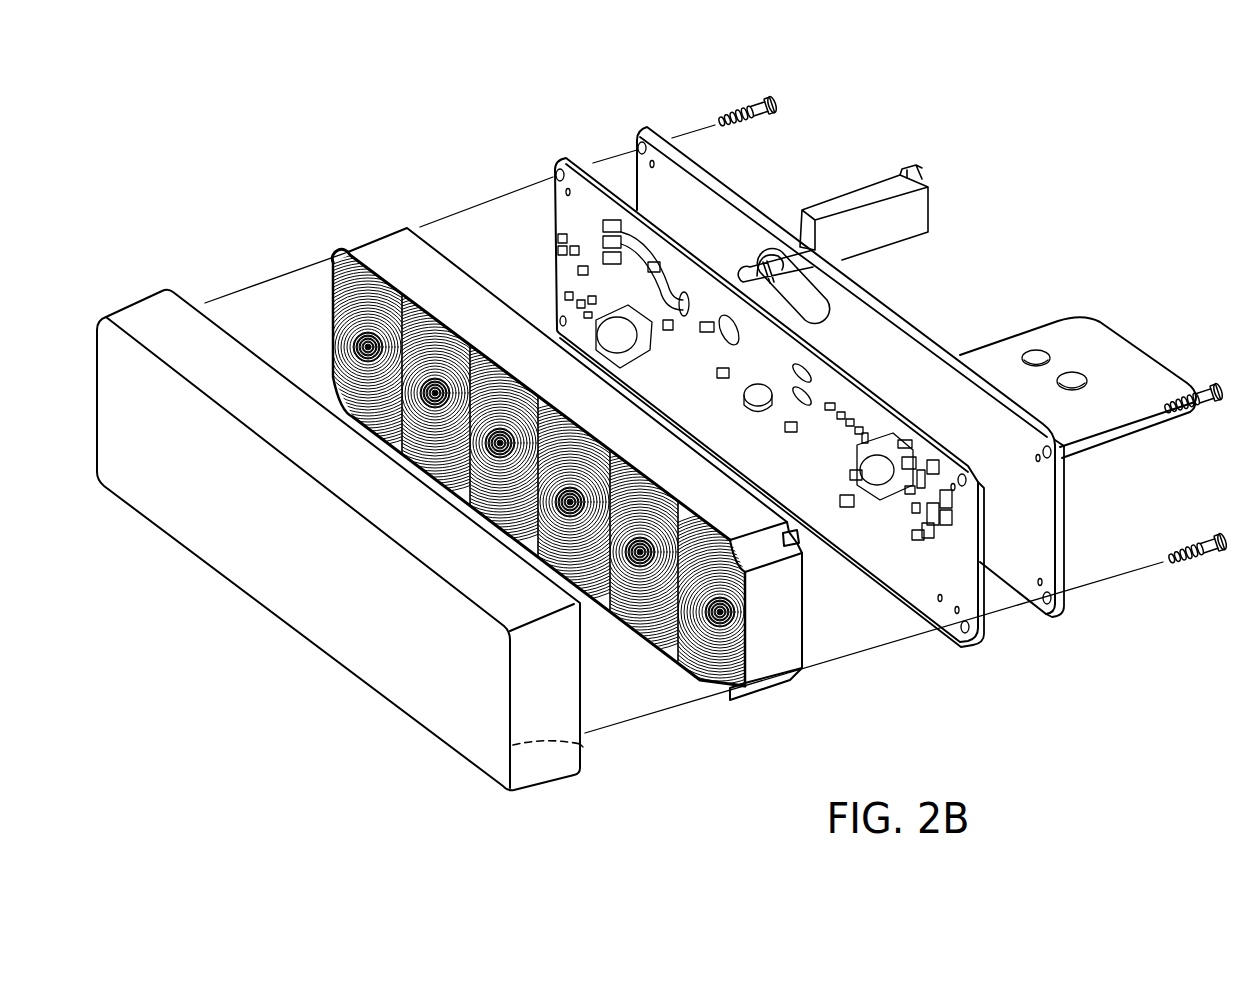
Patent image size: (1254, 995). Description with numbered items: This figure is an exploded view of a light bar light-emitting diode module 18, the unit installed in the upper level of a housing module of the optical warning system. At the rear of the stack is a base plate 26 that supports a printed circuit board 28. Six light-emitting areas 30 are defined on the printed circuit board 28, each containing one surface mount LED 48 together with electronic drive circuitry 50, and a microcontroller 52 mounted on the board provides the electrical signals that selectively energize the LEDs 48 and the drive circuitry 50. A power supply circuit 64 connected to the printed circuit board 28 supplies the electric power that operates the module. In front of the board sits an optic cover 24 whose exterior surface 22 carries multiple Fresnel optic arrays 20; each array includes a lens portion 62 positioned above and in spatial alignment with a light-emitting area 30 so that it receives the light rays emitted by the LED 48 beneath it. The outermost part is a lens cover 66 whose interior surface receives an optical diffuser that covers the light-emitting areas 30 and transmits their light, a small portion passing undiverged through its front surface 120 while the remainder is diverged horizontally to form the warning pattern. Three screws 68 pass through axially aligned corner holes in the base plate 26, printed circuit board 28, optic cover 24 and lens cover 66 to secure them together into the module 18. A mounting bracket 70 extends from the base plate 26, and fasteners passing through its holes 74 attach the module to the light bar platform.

The LED module 18 is at (662, 443).
The Fresnel optic arrays 20 is at (362, 347).
The exterior surface 22 is at (343, 302).
The optic cover 24 is at (383, 244).
The base plate 26 is at (1064, 507).
The printed circuit board 28 is at (980, 617).
The light-emitting areas 30 is at (574, 272).
The surface mount LEDs 48 is at (652, 317).
The electronic drive circuitry 50 is at (880, 435).
The microcontroller 52 is at (910, 493).
The lens portion 62 is at (750, 634).
The power supply circuit 64 is at (910, 218).
The lens cover 66 is at (133, 304).
The screws 68 is at (788, 110).
The mounting bracket 70 is at (1092, 335).
The holes 74 is at (1078, 378).
The front surface 120 is at (503, 747).